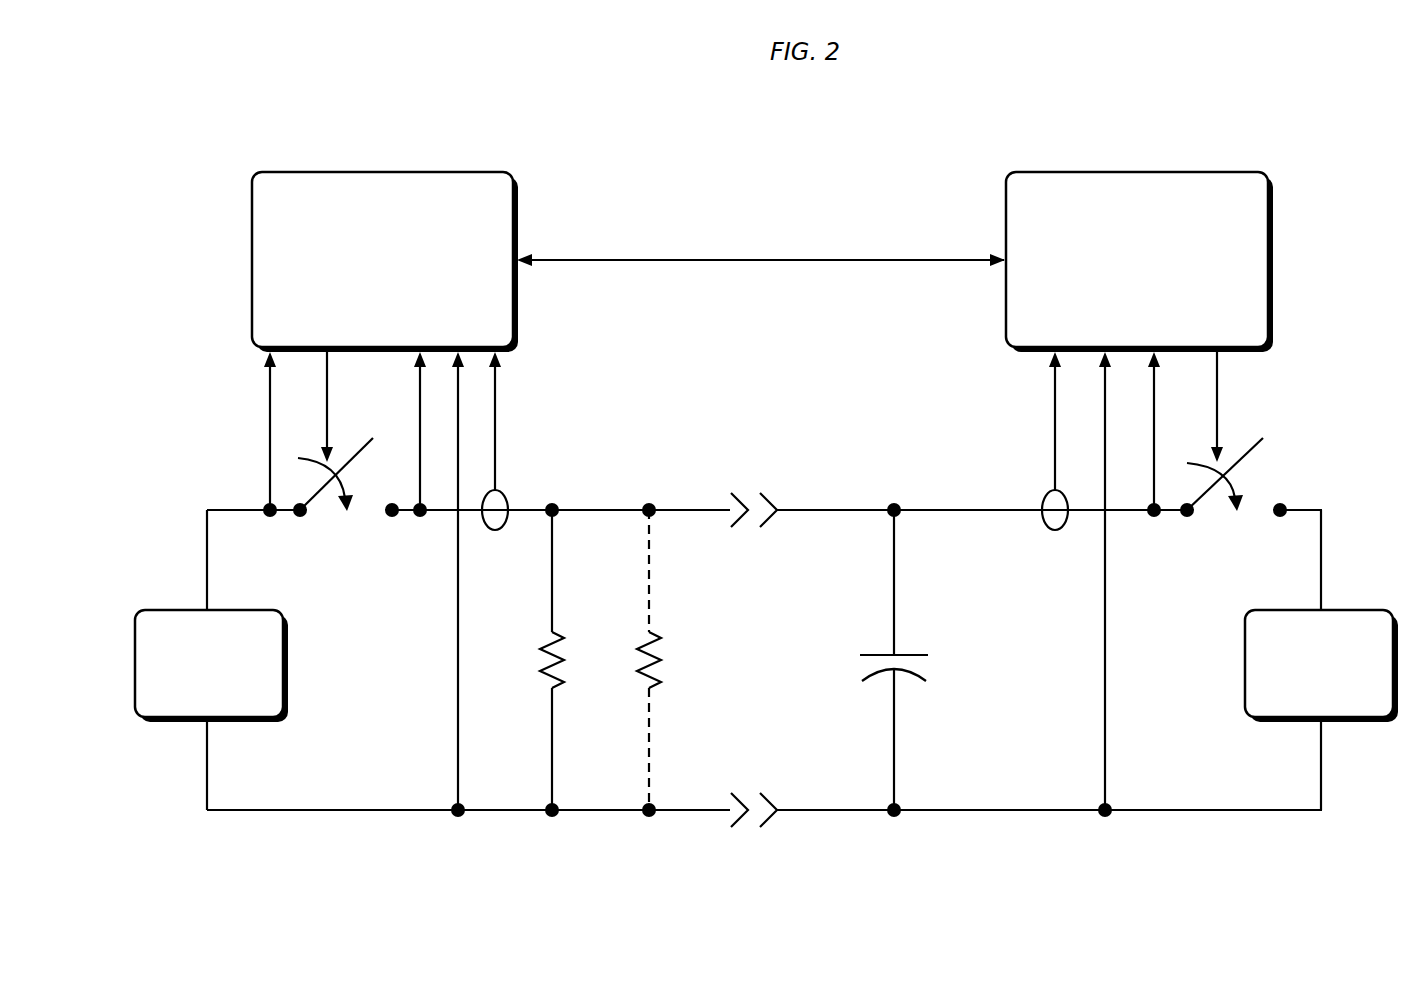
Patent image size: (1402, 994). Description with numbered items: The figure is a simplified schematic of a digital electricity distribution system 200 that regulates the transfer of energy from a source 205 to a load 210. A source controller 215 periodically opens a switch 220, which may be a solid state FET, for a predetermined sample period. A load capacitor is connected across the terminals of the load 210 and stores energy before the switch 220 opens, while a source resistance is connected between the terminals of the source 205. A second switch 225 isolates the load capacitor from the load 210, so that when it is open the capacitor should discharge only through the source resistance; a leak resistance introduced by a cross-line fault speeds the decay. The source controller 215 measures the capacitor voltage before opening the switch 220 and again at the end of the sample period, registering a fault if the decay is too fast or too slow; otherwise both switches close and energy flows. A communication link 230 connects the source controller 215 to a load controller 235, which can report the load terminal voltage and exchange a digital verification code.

The digital electricity distribution system 200 is at (276, 104).
The source 205 is at (290, 667).
The load 210 is at (1245, 663).
The source controller 215 is at (252, 257).
The switch 220 is at (318, 528).
The switch 225 is at (1218, 528).
The communication link 230 is at (768, 262).
The load controller 235 is at (1272, 253).